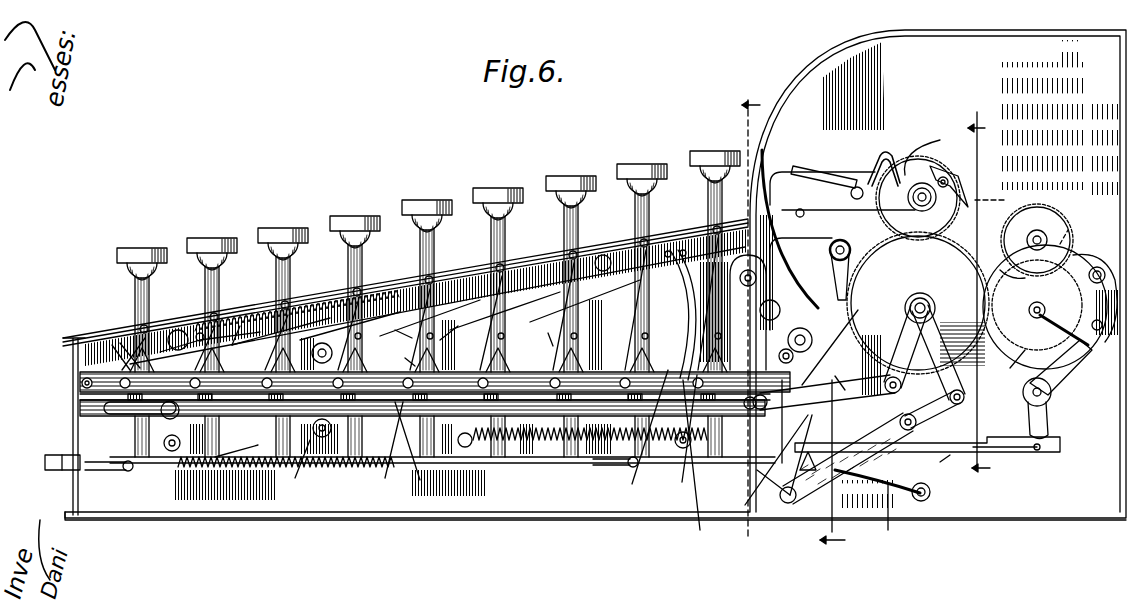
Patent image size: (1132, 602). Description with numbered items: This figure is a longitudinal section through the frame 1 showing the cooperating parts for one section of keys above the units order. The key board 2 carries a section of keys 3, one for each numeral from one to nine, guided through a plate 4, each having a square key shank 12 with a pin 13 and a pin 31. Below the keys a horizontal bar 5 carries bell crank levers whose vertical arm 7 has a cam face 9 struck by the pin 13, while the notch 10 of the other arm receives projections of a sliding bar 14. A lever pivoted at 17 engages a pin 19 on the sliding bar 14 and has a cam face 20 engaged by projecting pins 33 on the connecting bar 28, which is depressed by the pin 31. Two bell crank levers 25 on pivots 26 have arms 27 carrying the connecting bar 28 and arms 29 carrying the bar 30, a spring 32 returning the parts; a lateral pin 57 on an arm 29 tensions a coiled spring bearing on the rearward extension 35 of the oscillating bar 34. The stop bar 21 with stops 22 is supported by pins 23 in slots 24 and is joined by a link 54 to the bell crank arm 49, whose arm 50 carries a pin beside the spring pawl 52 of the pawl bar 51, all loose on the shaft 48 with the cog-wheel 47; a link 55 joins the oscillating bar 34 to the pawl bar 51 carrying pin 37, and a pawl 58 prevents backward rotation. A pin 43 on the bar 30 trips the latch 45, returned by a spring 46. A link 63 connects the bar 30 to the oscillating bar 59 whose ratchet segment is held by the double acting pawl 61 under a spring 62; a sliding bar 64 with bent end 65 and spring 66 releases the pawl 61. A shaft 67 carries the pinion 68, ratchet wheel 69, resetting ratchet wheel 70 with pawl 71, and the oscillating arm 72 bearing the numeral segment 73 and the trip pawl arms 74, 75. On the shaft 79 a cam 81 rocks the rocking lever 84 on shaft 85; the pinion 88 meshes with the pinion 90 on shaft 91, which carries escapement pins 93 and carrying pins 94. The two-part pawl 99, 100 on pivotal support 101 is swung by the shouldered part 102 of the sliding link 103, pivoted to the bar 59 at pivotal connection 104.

The frame 1 is at (147, 514).
The key board 2 is at (318, 236).
The keys 3 is at (190, 240).
The plate 4 is at (244, 442).
The horizontal bar 5 is at (706, 151).
The arm 7 is at (118, 332).
The cam face 9 is at (759, 294).
The notch 10 is at (792, 320).
The key shank 12 is at (636, 222).
The pin 13 is at (460, 323).
The sliding bar 14 is at (614, 368).
The pivot 17 is at (678, 438).
The pin 19 is at (640, 436).
The cam face 20 is at (682, 362).
The stop bar 21 is at (413, 451).
The stops 22 is at (270, 402).
The pins 23 is at (180, 416).
The slots 24 is at (118, 412).
The bell crank levers 25 is at (391, 325).
The pivots 26 is at (790, 260).
The arms 27 is at (243, 326).
The connecting bar 28 is at (544, 330).
The arms 29 is at (544, 402).
The bar 30 is at (384, 448).
The pin 31 is at (212, 316).
The spring 32 is at (323, 292).
The projecting pins 33 is at (724, 230).
The oscillating bar 34 is at (782, 463).
The rearward extension 35 is at (728, 312).
The pin 37 is at (945, 326).
The pin 43 is at (695, 465).
The latch 45 is at (718, 470).
The spring 46 is at (556, 440).
The cog-wheel 47 is at (918, 303).
The shaft 48 is at (925, 302).
The bell crank arm 49 is at (900, 345).
The bell crank arm 50 is at (978, 336).
The pawl bar 51 is at (846, 454).
The spring pawl 52 is at (930, 412).
The link 54 is at (830, 373).
The link 55 is at (852, 464).
The lateral pin 57 is at (764, 307).
The pawl 58 is at (787, 455).
The oscillating bar 59 is at (841, 337).
The double acting pawl 61 is at (766, 492).
The spring 62 is at (883, 517).
The link 63 is at (819, 392).
The sliding bar 64 is at (62, 456).
The bent end 65 is at (42, 455).
The spring 66 is at (215, 465).
The shaft 67 is at (949, 182).
The pinion 68 is at (1003, 189).
The ratchet wheel 69 is at (930, 156).
The resetting ratchet wheel 70 is at (955, 196).
The pawl 71 is at (946, 170).
The oscillating arm 72 is at (850, 255).
The numeral segment 73 is at (812, 90).
The pawl arm 74 is at (866, 176).
The pawl arm 75 is at (825, 164).
The shaft 79 is at (1075, 349).
The cam 81 is at (1006, 367).
The rocking lever 84 is at (1100, 300).
The shaft 85 is at (1097, 266).
The pinion 88 is at (1080, 346).
The pinion 90 is at (1047, 204).
The shaft 91 is at (1068, 240).
The pins 93 is at (1060, 218).
The pins 94 is at (1001, 246).
The pawl part 99 is at (1052, 392).
The pawl part 100 is at (1050, 426).
The pivotal support 101 is at (962, 418).
The shouldered part 102 is at (1005, 442).
The sliding link 103 is at (937, 466).
The pivotal connection 104 is at (912, 150).